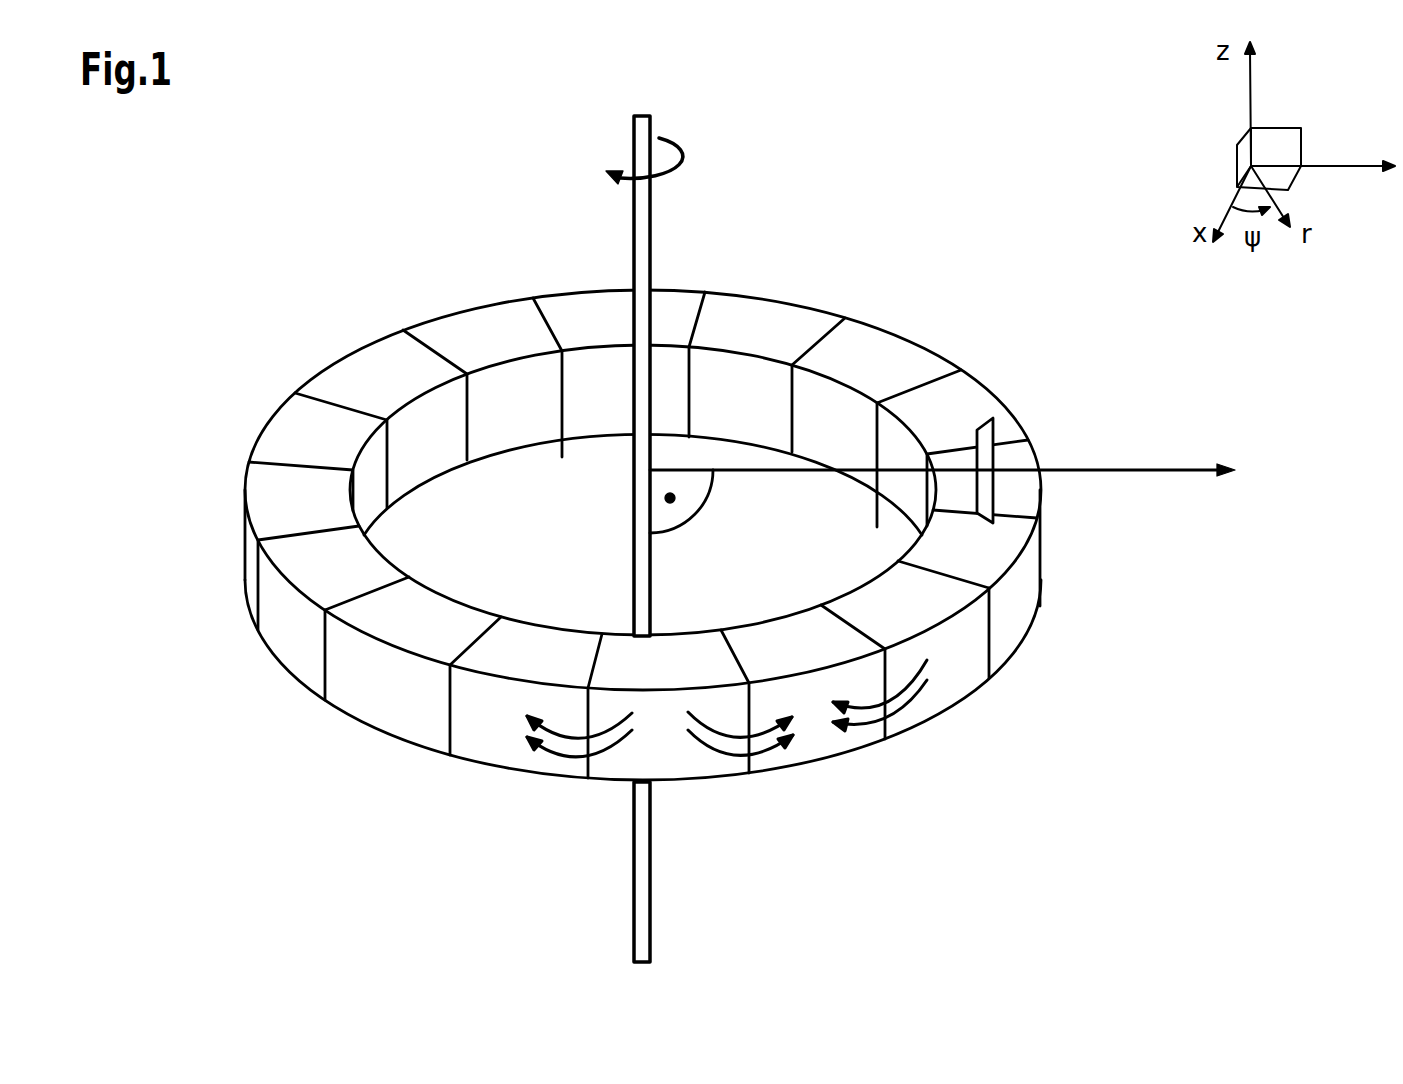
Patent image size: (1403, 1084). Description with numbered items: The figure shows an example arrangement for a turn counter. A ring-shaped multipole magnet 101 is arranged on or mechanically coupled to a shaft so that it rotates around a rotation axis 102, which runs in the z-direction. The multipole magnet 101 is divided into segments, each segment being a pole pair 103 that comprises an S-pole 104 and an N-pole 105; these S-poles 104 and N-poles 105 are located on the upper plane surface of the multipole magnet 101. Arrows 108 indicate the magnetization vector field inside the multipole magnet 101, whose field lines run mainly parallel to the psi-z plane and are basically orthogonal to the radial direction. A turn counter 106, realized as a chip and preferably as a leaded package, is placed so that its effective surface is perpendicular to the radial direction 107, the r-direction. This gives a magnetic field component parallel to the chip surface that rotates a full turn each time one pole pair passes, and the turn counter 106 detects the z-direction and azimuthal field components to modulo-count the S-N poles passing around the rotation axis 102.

The multipole magnet 101 is at (250, 300).
The rotation axis 102 is at (644, 518).
The pole pair 103 is at (882, 810).
The S-pole 104 is at (701, 648).
The N-pole 105 is at (805, 630).
The turn counter 106 is at (962, 398).
The radial direction 107 is at (942, 498).
The arrows 108 is at (578, 731).